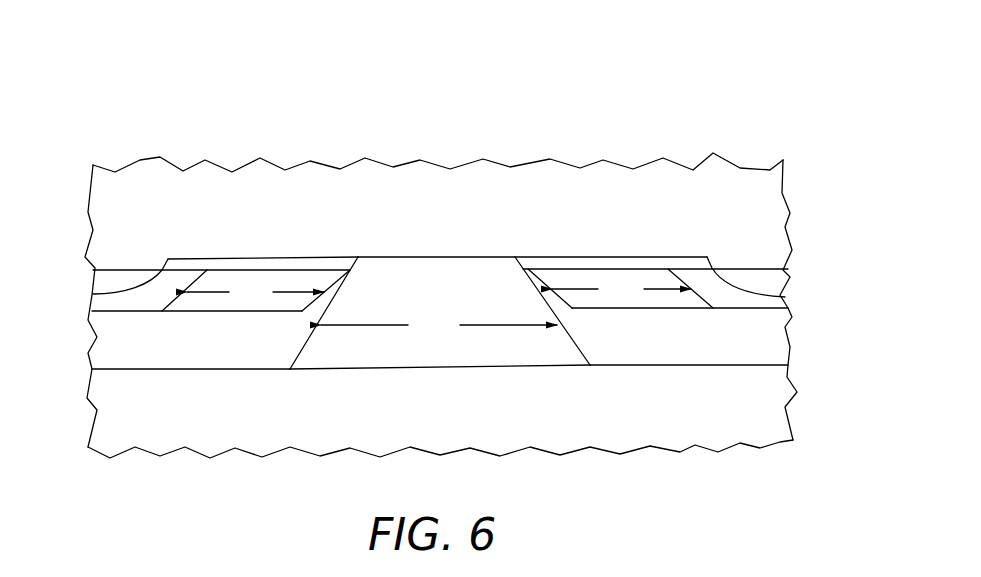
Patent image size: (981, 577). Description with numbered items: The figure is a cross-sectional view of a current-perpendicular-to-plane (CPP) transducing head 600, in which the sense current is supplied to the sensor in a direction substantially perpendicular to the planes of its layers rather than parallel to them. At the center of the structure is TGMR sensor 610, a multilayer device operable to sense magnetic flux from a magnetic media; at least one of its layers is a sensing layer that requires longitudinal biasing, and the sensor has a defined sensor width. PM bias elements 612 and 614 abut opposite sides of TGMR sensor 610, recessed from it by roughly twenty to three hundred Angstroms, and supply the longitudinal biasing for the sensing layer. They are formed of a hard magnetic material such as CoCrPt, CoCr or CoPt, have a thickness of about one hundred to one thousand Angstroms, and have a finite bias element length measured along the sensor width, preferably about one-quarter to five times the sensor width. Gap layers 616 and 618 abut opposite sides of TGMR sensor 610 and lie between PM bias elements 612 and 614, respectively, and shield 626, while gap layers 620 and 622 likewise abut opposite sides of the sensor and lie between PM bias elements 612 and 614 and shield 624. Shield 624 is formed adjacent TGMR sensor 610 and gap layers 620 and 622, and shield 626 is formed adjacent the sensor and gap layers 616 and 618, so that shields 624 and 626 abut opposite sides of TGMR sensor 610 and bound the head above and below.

The CPP transducing head 600 is at (603, 84).
The TGMR sensor 610 is at (394, 277).
The PM bias element 612 is at (93, 270).
The PM bias element 614 is at (707, 257).
The gap layer 616 is at (123, 350).
The gap layer 618 is at (740, 352).
The gap layer 620 is at (123, 305).
The gap layer 622 is at (747, 300).
The shield 624 is at (133, 238).
The shield 626 is at (138, 425).